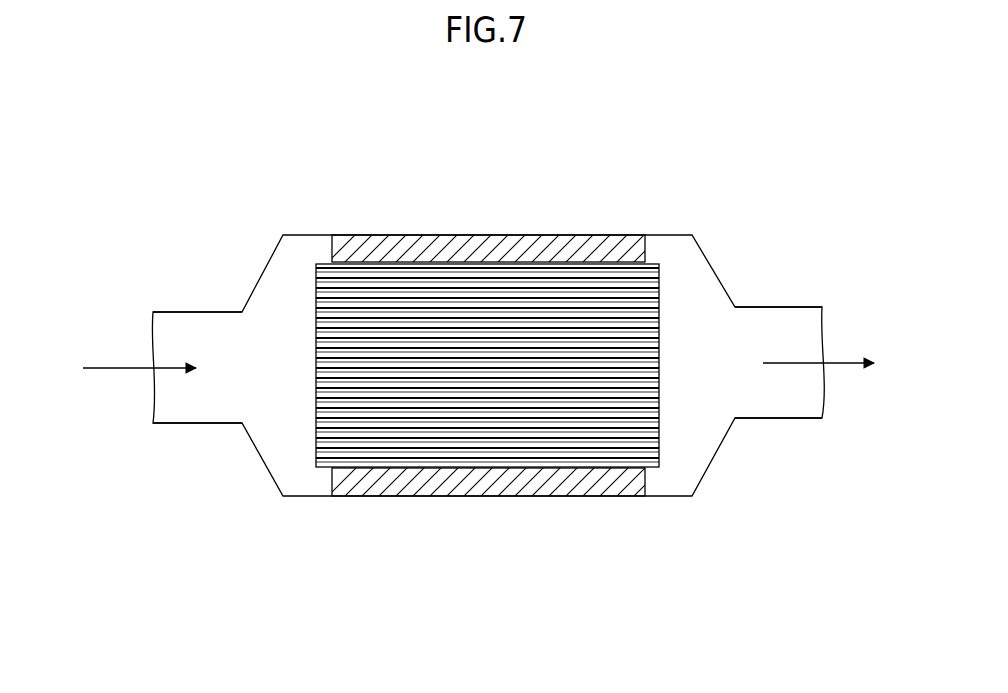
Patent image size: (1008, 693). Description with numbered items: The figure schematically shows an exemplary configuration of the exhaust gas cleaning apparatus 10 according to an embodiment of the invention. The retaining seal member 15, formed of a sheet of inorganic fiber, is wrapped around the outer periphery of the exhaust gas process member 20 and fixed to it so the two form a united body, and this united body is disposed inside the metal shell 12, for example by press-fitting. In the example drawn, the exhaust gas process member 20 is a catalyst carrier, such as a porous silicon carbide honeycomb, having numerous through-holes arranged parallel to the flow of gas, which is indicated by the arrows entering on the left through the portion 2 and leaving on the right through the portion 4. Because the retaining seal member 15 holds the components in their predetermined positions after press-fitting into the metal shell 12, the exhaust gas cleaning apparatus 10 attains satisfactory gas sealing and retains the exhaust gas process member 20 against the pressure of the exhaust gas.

The inlet pipe 2 is at (200, 322).
The outlet pipe 4 is at (801, 330).
The exhaust gas cleaning apparatus 10 is at (576, 134).
The metal shell 12 is at (305, 499).
The retaining seal member 15 is at (461, 242).
The exhaust gas process member 20 is at (672, 291).